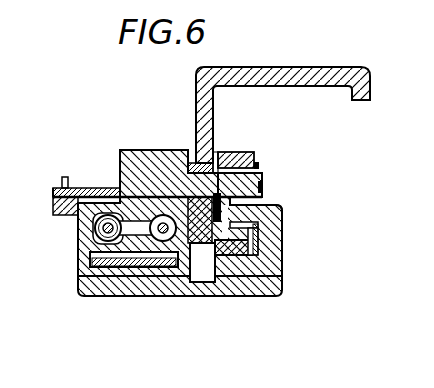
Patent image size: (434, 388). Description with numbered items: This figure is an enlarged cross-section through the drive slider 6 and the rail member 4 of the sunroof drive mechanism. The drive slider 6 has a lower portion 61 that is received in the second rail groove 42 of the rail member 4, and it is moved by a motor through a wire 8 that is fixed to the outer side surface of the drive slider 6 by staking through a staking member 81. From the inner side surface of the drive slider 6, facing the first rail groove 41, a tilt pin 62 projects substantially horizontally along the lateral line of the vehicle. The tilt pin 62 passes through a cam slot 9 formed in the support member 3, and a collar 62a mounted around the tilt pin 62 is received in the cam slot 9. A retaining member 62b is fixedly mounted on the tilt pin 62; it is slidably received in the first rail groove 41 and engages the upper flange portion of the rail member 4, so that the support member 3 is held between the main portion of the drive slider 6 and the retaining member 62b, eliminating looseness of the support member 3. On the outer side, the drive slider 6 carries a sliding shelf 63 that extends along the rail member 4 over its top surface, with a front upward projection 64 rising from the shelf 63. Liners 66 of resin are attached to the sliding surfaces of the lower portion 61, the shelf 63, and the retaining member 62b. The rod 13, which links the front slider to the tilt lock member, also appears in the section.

The support member 3 is at (283, 68).
The drive slider 6 is at (134, 146).
The cam slot 9 is at (193, 163).
The collar 62a is at (212, 156).
The retaining member 62b is at (256, 163).
The tilt pin 62 is at (265, 182).
The rail member 4 is at (283, 210).
The liners 66 is at (262, 222).
The first rail groove 41 is at (250, 256).
The rod 13 is at (167, 262).
The second rail groove 42 is at (128, 278).
The lower portion 61 is at (100, 254).
The wire 8 is at (100, 241).
The staking member 81 is at (95, 228).
The sliding shelf 63 is at (55, 188).
The front upward projection 64 is at (65, 177).